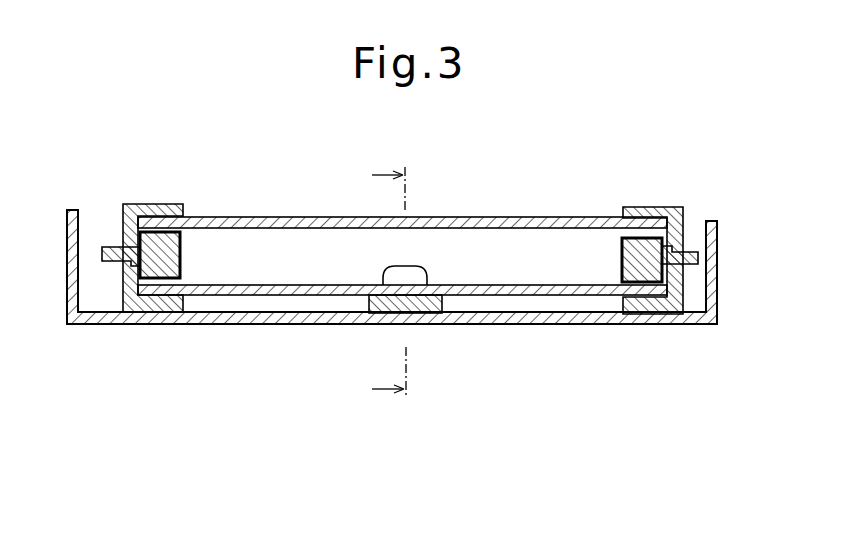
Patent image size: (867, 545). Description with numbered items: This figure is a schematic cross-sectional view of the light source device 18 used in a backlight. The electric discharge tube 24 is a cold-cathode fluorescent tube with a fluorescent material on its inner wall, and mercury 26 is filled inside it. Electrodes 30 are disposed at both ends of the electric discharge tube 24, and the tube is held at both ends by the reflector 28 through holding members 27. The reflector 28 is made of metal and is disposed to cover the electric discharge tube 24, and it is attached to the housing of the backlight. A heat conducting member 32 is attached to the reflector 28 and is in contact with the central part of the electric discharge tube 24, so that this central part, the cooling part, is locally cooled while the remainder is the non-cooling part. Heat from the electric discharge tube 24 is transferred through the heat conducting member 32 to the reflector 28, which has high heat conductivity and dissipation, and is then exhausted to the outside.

The light source device 18 is at (512, 196).
The electric discharge tube 24 is at (285, 222).
The mercury 26 is at (413, 275).
The holding member 27 is at (147, 204).
The reflector 28 is at (245, 323).
The electrode 30 is at (171, 257).
The heat conducting member 32 is at (421, 301).